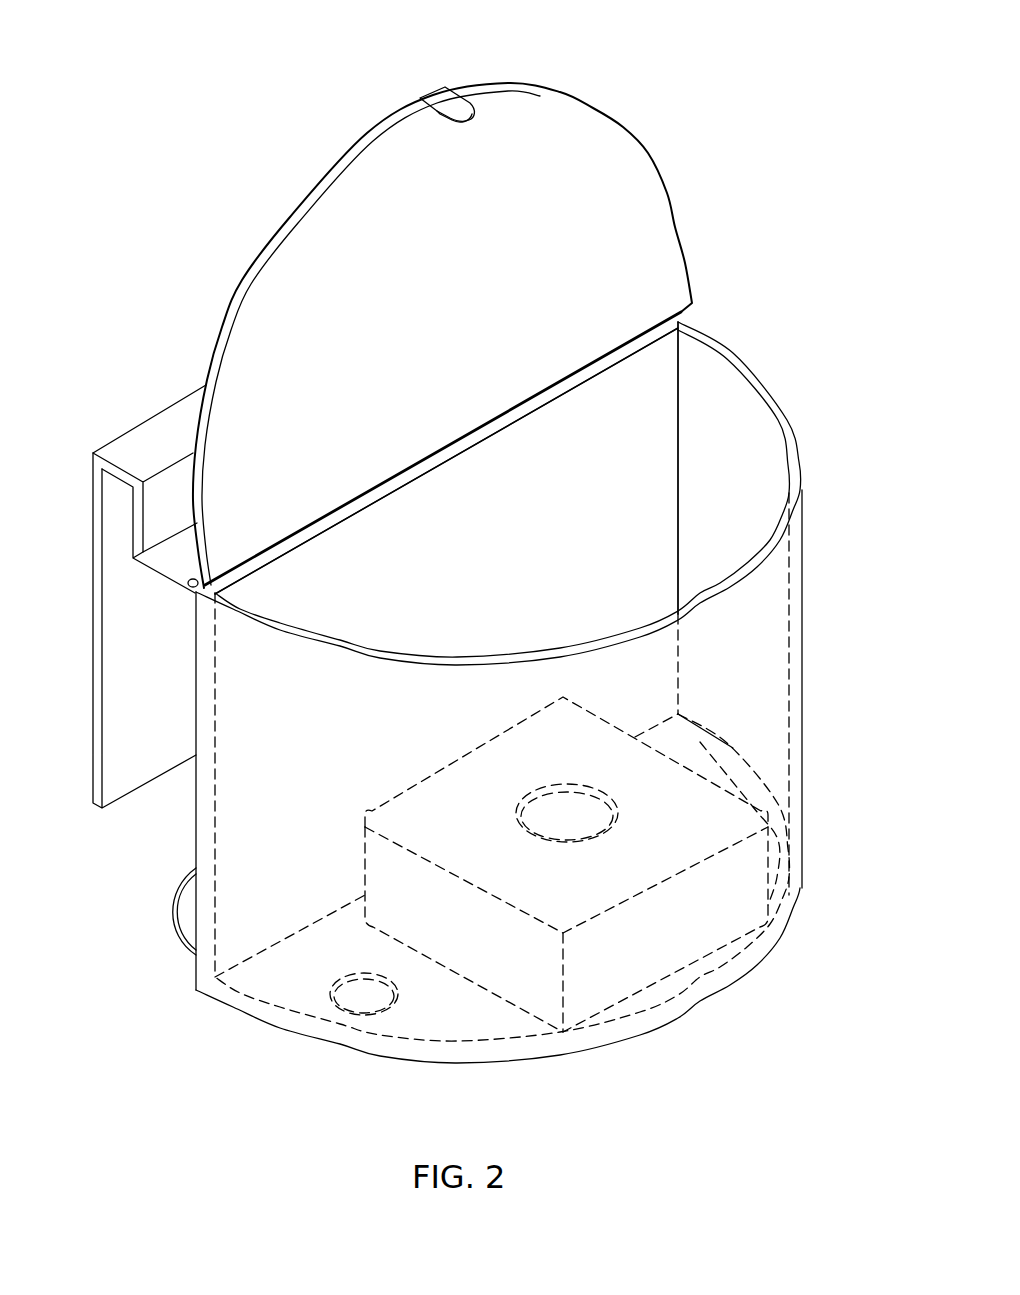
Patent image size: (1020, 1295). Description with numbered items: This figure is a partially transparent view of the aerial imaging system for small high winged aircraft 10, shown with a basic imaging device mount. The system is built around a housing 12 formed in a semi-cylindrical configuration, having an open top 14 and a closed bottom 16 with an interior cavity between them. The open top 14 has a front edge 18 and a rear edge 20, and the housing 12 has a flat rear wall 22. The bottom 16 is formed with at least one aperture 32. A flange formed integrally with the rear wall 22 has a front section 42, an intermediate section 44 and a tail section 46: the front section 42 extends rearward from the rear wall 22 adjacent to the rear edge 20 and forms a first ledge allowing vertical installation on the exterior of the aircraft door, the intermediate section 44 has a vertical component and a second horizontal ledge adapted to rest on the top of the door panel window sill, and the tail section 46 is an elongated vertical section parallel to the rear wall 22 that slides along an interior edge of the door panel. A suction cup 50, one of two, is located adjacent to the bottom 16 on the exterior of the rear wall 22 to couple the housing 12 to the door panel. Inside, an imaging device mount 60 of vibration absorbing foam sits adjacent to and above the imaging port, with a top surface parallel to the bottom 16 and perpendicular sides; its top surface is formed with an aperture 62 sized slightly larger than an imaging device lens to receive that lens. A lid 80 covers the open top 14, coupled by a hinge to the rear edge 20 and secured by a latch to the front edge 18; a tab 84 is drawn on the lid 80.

The aerial imaging system for small high winged aircraft 10 is at (107, 151).
The housing 12 is at (240, 795).
The open top 14 is at (767, 557).
The closed bottom 16 is at (473, 1067).
The front edge 18 is at (648, 633).
The rear edge 20 is at (603, 373).
The rear wall 22 is at (645, 452).
The aperture 32 is at (352, 993).
The front section 42 is at (160, 578).
The intermediate section 44 is at (140, 443).
The tail section 46 is at (100, 748).
The suction cup 50 is at (170, 933).
The imaging device mount 60 is at (740, 905).
The aperture 62 is at (585, 820).
The lid 80 is at (624, 128).
The lid tab 84 is at (438, 100).